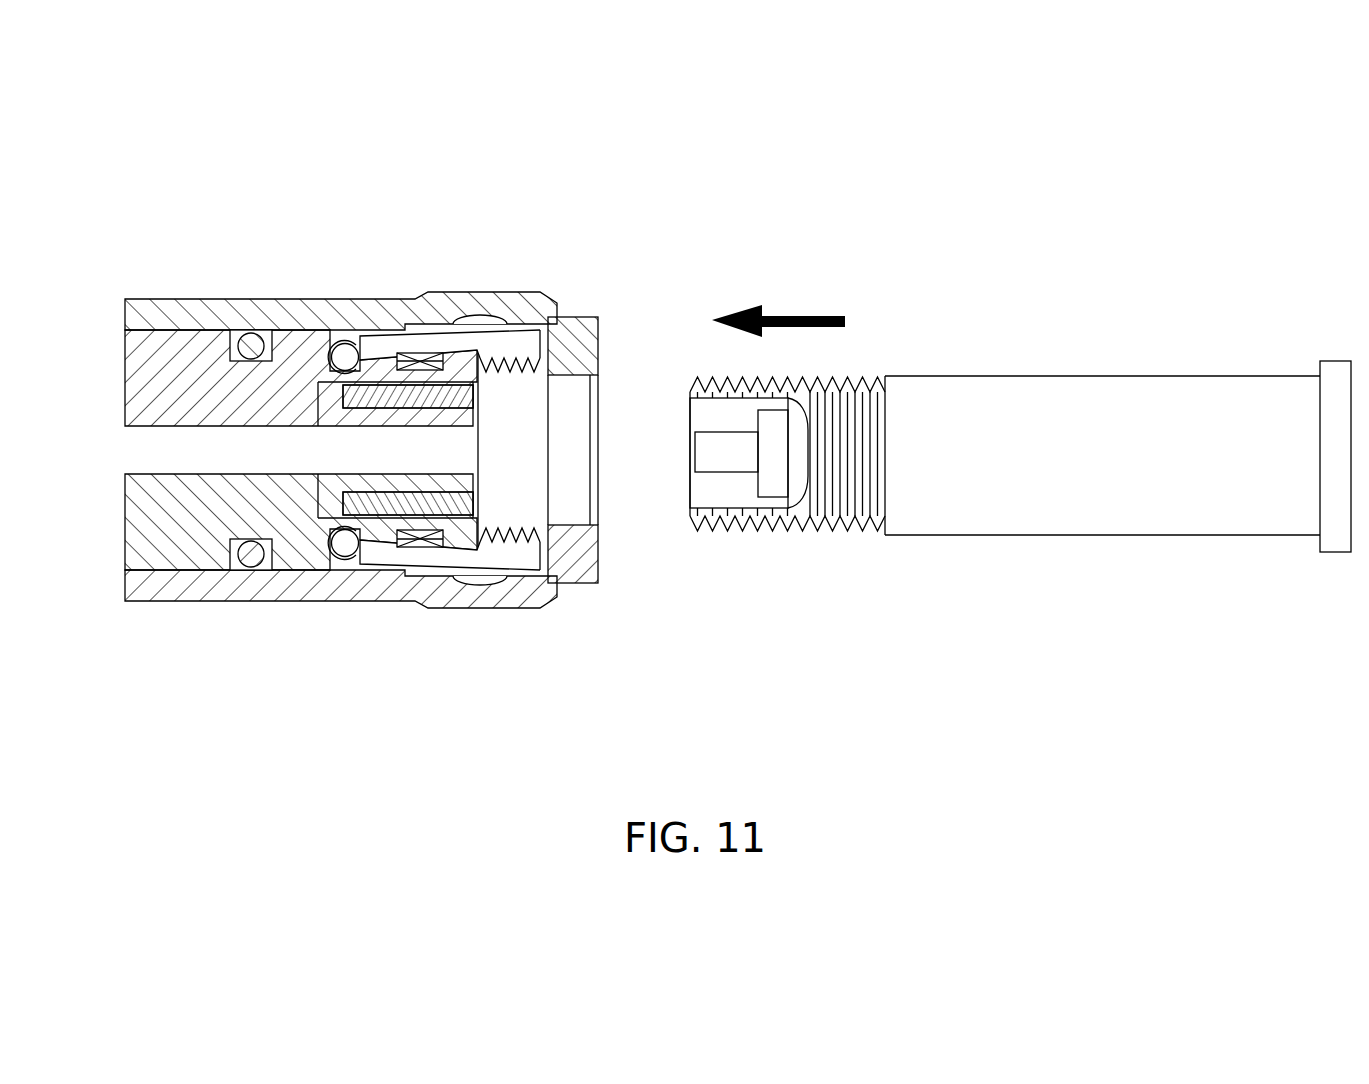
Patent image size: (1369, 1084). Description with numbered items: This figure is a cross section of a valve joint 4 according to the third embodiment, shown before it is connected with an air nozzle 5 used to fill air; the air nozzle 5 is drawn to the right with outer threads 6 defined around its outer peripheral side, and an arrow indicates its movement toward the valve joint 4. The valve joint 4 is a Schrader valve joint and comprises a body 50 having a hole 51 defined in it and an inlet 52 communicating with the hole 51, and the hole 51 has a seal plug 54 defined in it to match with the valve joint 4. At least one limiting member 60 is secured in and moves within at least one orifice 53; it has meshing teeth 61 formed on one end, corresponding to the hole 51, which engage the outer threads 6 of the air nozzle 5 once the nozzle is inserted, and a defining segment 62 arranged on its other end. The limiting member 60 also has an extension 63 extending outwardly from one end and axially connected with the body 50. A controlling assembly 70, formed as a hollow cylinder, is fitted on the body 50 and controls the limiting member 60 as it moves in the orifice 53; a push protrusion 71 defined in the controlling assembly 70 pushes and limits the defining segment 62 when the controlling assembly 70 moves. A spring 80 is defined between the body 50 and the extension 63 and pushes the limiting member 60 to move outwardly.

The valve joint 4 is at (368, 455).
The air nozzle 5 is at (1053, 372).
The outer threads 6 is at (866, 376).
The body 50 is at (178, 548).
The hole 51 is at (563, 433).
The inlet 52 is at (138, 449).
The orifice 53 is at (542, 552).
The seal plug 54 is at (385, 360).
The limiting member 60 is at (458, 580).
The meshing teeth 61 is at (515, 535).
The defining segment 62 is at (493, 590).
The extension 63 is at (388, 555).
The controlling assembly 70 is at (272, 296).
The push protrusion 71 is at (480, 570).
The spring 80 is at (421, 552).